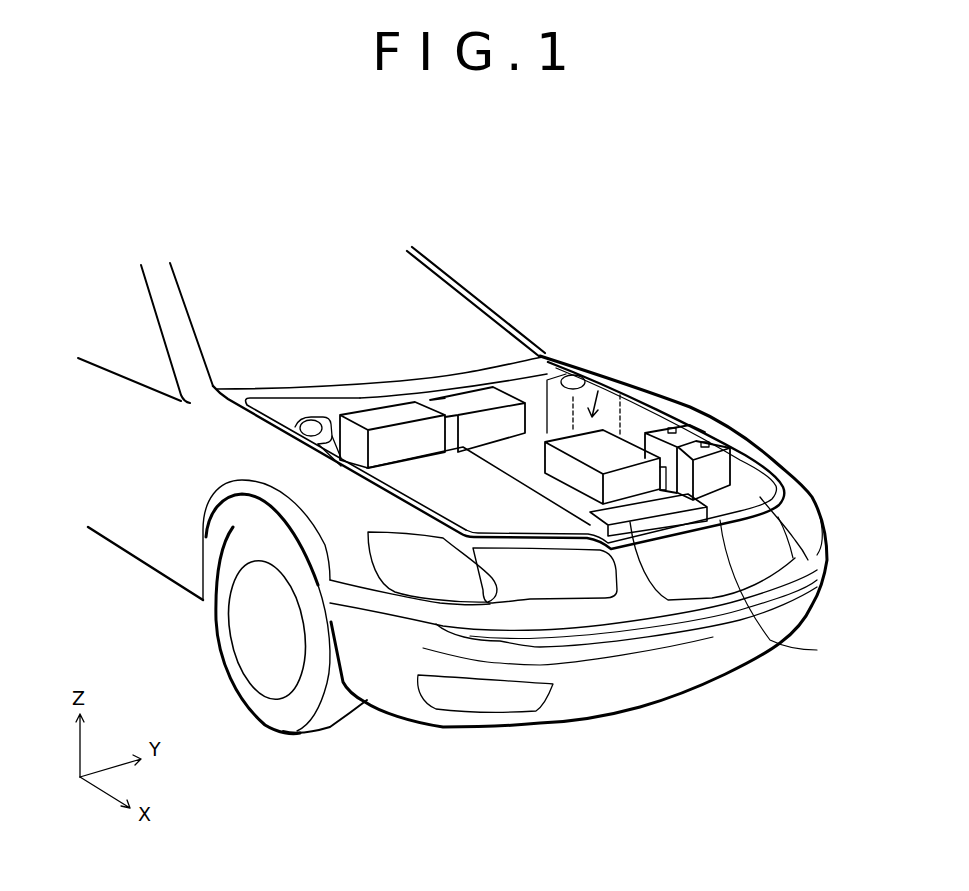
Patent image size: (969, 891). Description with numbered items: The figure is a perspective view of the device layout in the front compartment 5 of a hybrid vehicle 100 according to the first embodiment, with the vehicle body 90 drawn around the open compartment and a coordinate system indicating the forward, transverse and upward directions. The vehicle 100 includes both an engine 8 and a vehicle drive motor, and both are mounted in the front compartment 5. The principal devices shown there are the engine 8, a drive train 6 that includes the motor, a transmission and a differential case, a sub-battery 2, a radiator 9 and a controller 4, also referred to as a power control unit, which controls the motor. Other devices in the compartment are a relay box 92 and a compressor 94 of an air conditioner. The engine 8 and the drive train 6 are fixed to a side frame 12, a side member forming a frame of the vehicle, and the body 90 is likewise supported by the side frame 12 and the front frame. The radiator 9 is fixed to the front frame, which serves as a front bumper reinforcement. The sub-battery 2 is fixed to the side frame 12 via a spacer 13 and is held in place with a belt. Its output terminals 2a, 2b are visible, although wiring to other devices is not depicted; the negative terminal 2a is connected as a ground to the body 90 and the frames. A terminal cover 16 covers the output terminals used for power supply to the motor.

The vehicle 100 is at (592, 246).
The vehicle body 90 is at (140, 537).
The relay box 92 is at (405, 410).
The compressor 94 is at (485, 400).
The drive train 6 is at (517, 450).
The front compartment 5 is at (603, 449).
The controller 4 is at (615, 413).
The sub-battery 2 is at (690, 430).
The negative terminal 2a is at (706, 445).
The output terminal 2b is at (675, 430).
The spacer 13 is at (722, 492).
The side frame 12 is at (817, 565).
The terminal cover 16 is at (808, 606).
The radiator 9 is at (780, 643).
The engine 8 is at (527, 517).